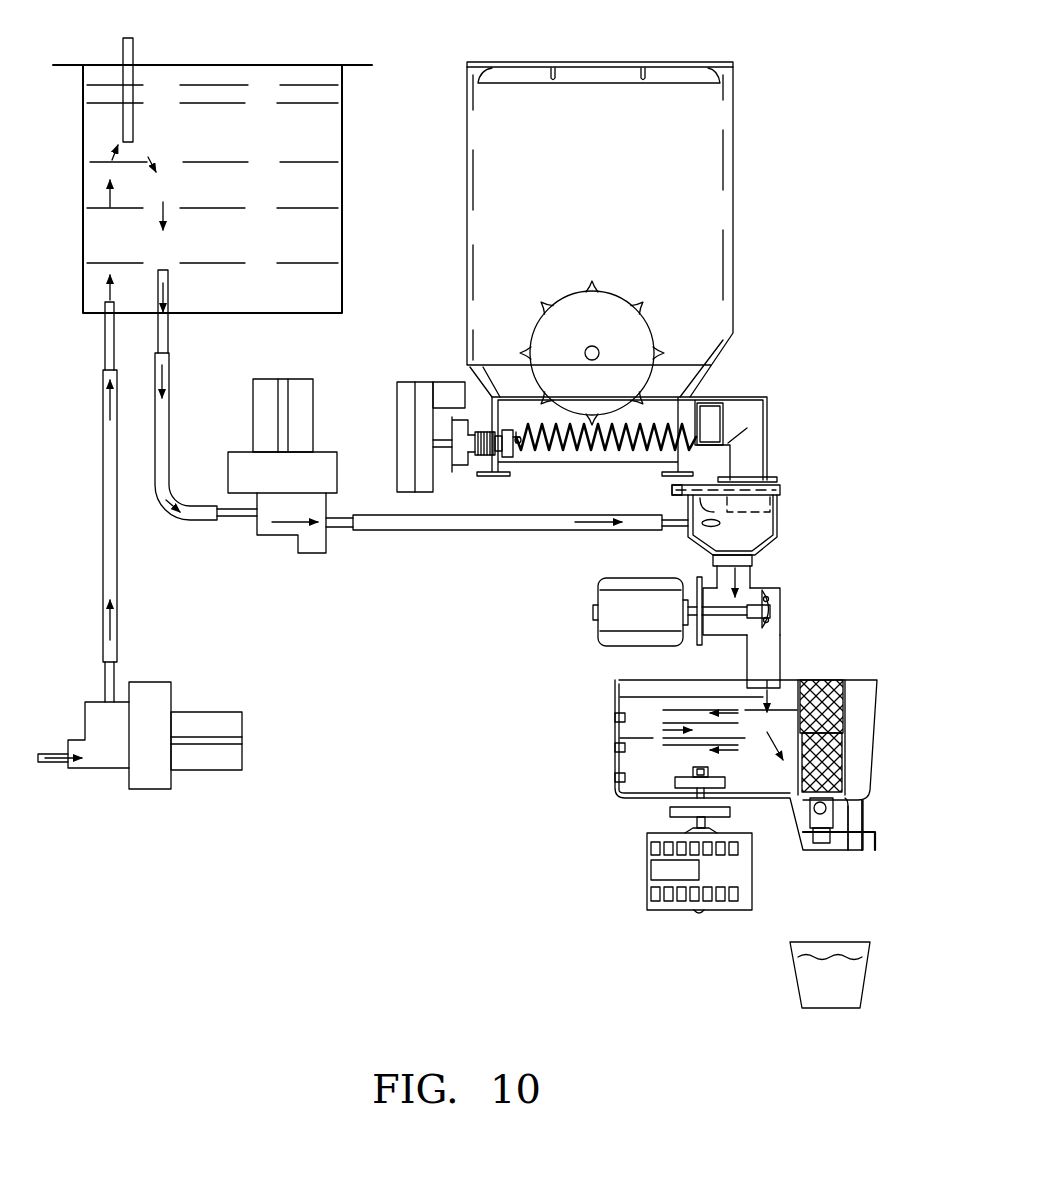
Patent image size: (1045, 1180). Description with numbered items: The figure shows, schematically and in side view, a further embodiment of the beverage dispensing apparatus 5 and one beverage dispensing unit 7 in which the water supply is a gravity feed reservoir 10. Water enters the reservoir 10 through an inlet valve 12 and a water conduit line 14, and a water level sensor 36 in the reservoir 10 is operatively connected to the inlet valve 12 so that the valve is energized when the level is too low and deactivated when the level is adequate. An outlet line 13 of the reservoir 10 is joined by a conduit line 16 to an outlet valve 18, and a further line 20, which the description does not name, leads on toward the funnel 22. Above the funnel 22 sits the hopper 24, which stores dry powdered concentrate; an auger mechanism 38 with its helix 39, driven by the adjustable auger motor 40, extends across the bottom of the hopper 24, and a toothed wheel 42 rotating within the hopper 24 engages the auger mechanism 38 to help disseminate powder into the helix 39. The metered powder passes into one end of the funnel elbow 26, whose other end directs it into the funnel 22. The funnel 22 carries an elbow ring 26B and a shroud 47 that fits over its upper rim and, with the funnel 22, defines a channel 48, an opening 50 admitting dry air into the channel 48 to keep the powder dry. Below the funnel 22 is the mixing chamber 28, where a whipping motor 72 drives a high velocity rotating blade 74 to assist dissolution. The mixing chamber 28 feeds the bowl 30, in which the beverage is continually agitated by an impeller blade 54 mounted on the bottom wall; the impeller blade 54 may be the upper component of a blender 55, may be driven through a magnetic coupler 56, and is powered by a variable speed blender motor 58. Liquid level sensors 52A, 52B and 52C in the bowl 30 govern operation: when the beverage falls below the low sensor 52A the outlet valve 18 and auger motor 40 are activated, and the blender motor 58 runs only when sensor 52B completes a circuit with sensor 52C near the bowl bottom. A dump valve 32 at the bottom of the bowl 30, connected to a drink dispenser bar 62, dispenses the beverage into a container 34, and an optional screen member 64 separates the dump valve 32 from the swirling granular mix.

The beverage dispensing apparatus 5 is at (812, 65).
The beverage dispensing unit 7 is at (870, 656).
The gravity feed reservoir 10 is at (345, 143).
The inlet valve 12 is at (172, 772).
The outlet line 13 is at (168, 335).
The water conduit line 14 is at (117, 590).
The conduit line 16 is at (165, 508).
The outlet valve 18 is at (280, 538).
The delivery pipe 20 is at (488, 531).
The funnel 22 is at (693, 538).
The hopper 24 is at (732, 175).
The funnel elbow 26 is at (767, 433).
The elbow ring 26B is at (773, 477).
The mixing chamber 28 is at (782, 652).
The bowl 30 is at (870, 780).
The dump valve 32 is at (820, 845).
The container 34 is at (860, 1008).
The water level sensor 36 is at (137, 40).
The auger mechanism 38 is at (725, 427).
The helix 39 is at (577, 447).
The adjustable auger motor 40 is at (413, 382).
The toothed wheel 42 is at (650, 332).
The shroud 47 is at (780, 492).
The channel 48 is at (745, 494).
The opening 50 is at (670, 492).
The low liquid level sensor 52A is at (614, 717).
The blender motor liquid level sensor 52B is at (614, 748).
The liquid level sensor 52C is at (614, 778).
The impeller blade 54 is at (725, 783).
The blender 55 is at (612, 853).
The magnetic coupler 56 is at (668, 812).
The variable speed blender motor 58 is at (652, 902).
The drink dispenser bar 62 is at (875, 850).
The screen member 64 is at (833, 705).
The whipping motor 72 is at (598, 593).
The rotating blade 74 is at (772, 605).